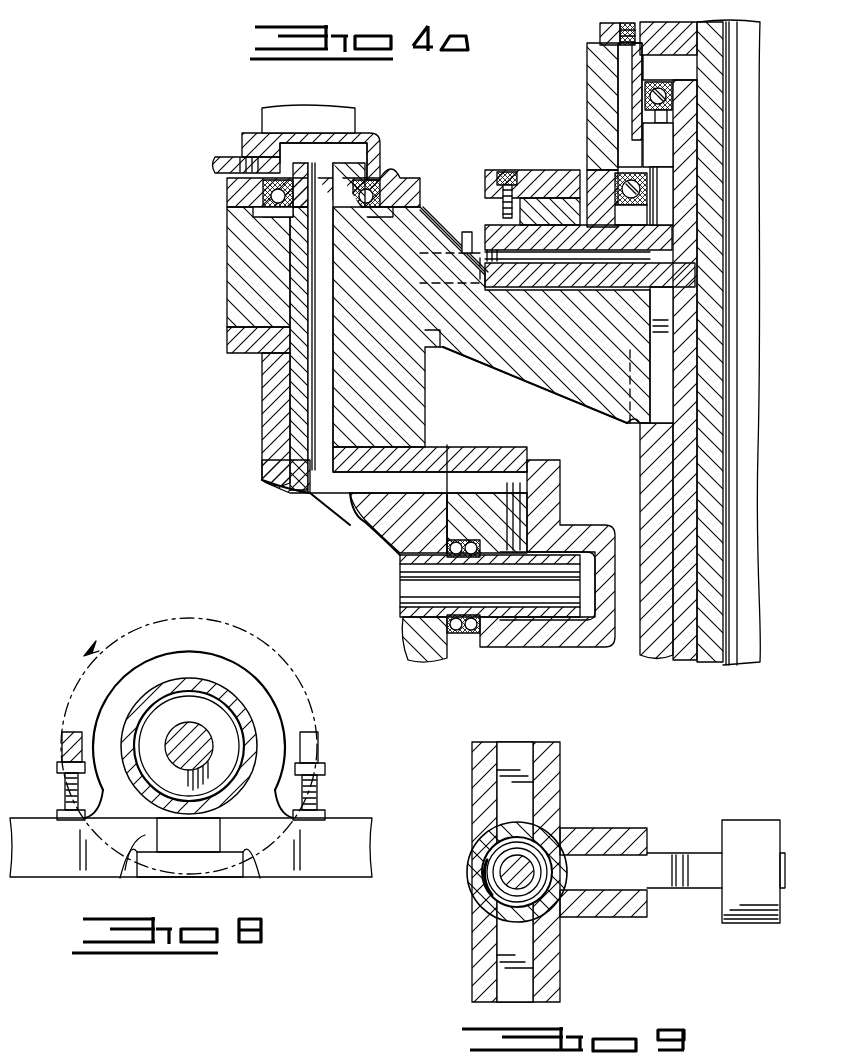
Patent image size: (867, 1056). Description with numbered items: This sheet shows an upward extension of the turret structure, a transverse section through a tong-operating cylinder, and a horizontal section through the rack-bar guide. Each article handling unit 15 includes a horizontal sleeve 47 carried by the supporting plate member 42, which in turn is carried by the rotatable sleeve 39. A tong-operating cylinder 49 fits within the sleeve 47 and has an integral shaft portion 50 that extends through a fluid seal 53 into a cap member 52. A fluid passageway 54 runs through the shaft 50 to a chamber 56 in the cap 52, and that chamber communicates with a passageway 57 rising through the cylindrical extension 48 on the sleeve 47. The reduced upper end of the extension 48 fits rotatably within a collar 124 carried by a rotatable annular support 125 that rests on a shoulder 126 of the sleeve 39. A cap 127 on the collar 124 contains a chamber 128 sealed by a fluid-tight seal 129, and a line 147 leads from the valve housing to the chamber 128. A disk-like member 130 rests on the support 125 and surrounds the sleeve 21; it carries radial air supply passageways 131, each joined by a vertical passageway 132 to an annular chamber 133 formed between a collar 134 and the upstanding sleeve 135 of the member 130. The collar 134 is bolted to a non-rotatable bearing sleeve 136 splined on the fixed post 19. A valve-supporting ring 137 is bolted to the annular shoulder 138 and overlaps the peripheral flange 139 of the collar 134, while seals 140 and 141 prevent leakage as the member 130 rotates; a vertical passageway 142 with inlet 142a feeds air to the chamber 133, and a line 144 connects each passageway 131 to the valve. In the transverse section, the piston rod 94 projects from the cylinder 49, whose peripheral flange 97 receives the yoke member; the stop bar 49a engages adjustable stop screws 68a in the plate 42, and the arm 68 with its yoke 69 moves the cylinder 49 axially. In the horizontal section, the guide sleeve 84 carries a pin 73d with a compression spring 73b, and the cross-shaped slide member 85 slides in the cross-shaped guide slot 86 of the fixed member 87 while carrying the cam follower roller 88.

In FIG. 4A, the article handling unit 15 is at (375, 553).
In FIG. 4A, the fixed post 19 is at (748, 122).
In FIG. 4A, the sleeve 21 is at (715, 183).
In FIG. 4A, the rotatable sleeve 39 is at (640, 467).
In FIG. 4A, the sleeve 47 is at (306, 505).
In FIG. 8, the sleeve 47 is at (280, 710).
In FIG. 4A, the cylindrical extension 48 is at (425, 415).
In FIG. 4A, the shaft portion 50 is at (400, 620).
In FIG. 4A, the cap member 52 is at (588, 647).
In FIG. 4A, the fluid seal 53 is at (462, 633).
In FIG. 4A, the fluid passageway 54 is at (400, 592).
In FIG. 4A, the chamber 56 is at (560, 620).
In FIG. 4A, the passageway 57 is at (360, 493).
In FIG. 4A, the collar 124 is at (235, 237).
In FIG. 4A, the rotatable annular support 125 is at (535, 385).
In FIG. 4A, the shoulder 126 is at (630, 423).
In FIG. 4A, the cap 127 is at (243, 135).
In FIG. 4A, the chamber 128 is at (353, 153).
In FIG. 4A, the fluid-tight seal 129 is at (262, 193).
In FIG. 4A, the disk-like member 130 is at (478, 225).
In FIG. 4A, the air supply passageway 131 is at (648, 268).
In FIG. 4A, the vertical passageway 132 is at (663, 228).
In FIG. 4A, the annular chamber 133 is at (668, 115).
In FIG. 4A, the collar 134 is at (590, 115).
In FIG. 4A, the upstanding sleeve 135 is at (685, 143).
In FIG. 4A, the non-rotatable bearing sleeve 136 is at (603, 30).
In FIG. 4A, the valve-supporting ring 137 is at (530, 170).
In FIG. 4A, the annular shoulder 138 is at (487, 197).
In FIG. 4A, the peripheral flange 139 is at (570, 200).
In FIG. 4A, the annular fluid-tight seal 140 is at (647, 202).
In FIG. 4A, the seal 141 is at (645, 95).
In FIG. 4A, the vertical passageway 142 is at (622, 70).
In FIG. 4A, the inlet 142a is at (618, 25).
In FIG. 4A, the line 144 is at (472, 240).
In FIG. 4A, the line 147 is at (215, 160).
In FIG. 8, the supporting plate member 42 is at (372, 820).
In FIG. 8, the tong-operating cylinder 49 is at (168, 680).
In FIG. 8, the stop bar 49a is at (60, 740).
In FIG. 8, the radially extending arm 68 is at (250, 862).
In FIG. 8, the adjustable stop screws 68a is at (60, 782).
In FIG. 8, the yoke 69 is at (130, 860).
In FIG. 8, the piston rod 94 is at (174, 730).
In FIG. 8, the peripheral flange 97 is at (180, 613).
In FIG. 9, the compression spring 73b is at (487, 898).
In FIG. 9, the pin 73d is at (505, 872).
In FIG. 9, the guide sleeve 84 is at (470, 858).
In FIG. 9, the cross-shaped slide member 85 is at (512, 742).
In FIG. 9, the cross-shaped guide slot 86 is at (500, 805).
In FIG. 9, the fixed member 87 is at (557, 765).
In FIG. 9, the roller 88 is at (732, 822).